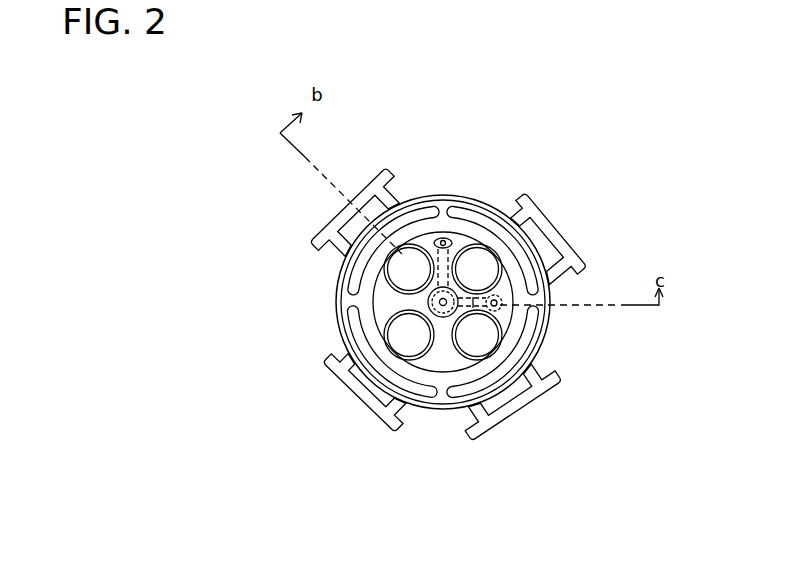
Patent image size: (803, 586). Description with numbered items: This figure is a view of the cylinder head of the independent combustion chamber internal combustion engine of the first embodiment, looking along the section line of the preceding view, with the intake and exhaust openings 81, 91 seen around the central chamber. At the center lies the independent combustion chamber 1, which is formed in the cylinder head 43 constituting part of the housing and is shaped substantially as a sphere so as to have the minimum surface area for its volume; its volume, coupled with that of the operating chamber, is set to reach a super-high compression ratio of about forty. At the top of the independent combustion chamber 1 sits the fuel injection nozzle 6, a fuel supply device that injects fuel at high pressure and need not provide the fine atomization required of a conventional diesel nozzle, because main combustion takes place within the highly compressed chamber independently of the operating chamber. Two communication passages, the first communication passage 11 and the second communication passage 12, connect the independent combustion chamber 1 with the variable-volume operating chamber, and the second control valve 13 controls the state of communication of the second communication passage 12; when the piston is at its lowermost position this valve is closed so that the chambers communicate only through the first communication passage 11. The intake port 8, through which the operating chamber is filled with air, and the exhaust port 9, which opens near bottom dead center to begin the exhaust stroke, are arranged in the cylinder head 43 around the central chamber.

The independent combustion chamber 1 is at (446, 308).
The fuel injection nozzle 6 is at (446, 240).
The intake port 8 is at (310, 236).
The exhaust port 9 is at (556, 213).
The first communication passage 11 is at (439, 292).
The second communication passage 12 is at (471, 297).
The second control valve 13 is at (503, 304).
The cylinder head 43 is at (276, 212).
The spindle bore 81 is at (399, 332).
The spindle bore 91 is at (487, 268).